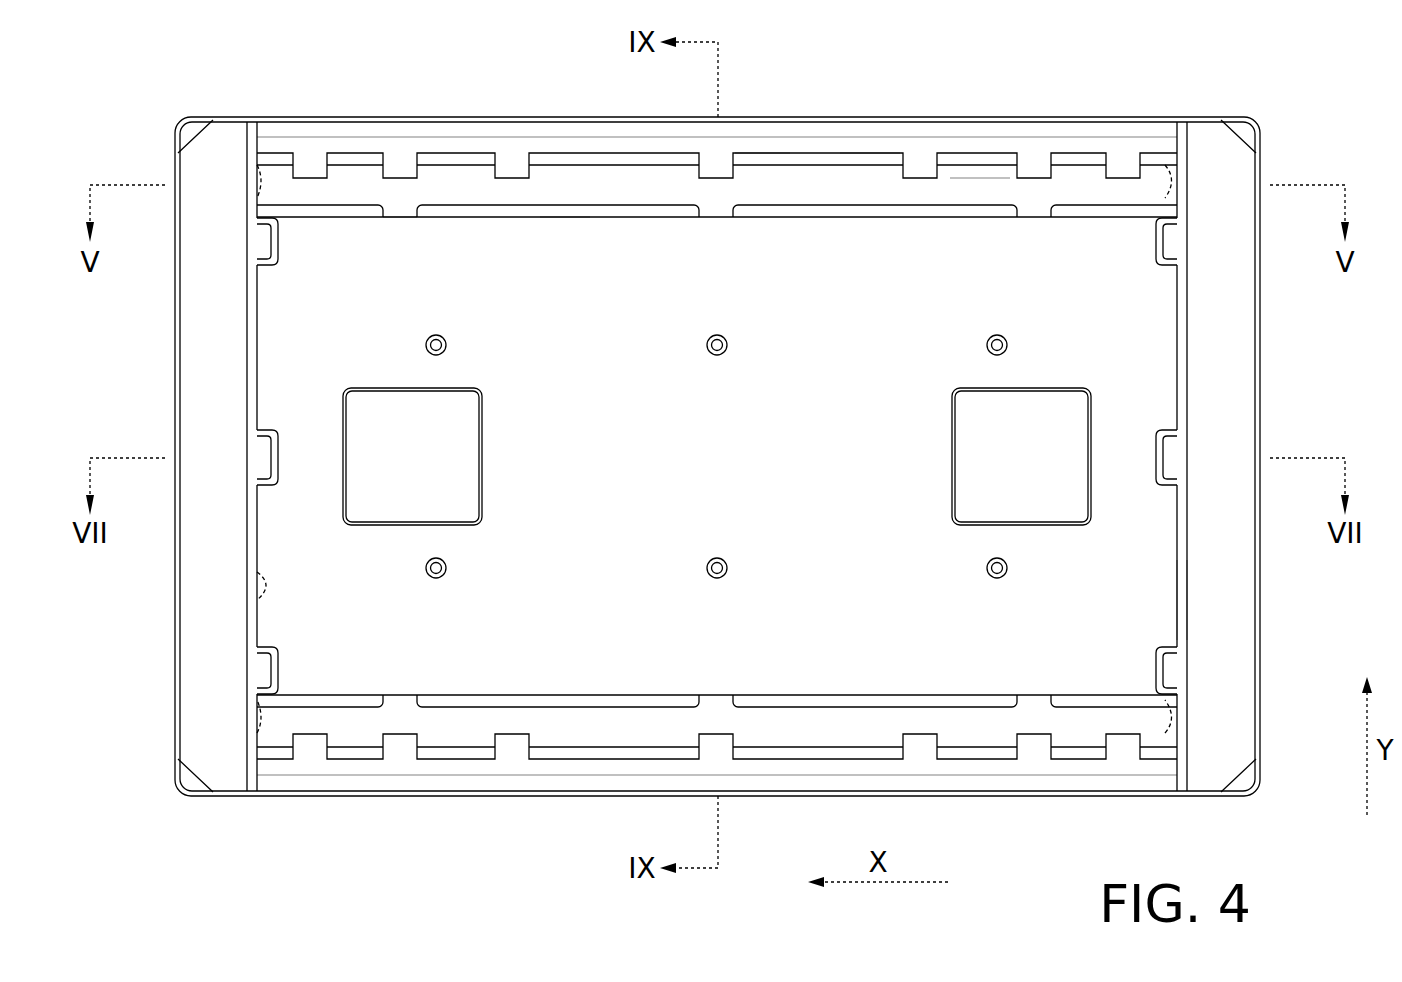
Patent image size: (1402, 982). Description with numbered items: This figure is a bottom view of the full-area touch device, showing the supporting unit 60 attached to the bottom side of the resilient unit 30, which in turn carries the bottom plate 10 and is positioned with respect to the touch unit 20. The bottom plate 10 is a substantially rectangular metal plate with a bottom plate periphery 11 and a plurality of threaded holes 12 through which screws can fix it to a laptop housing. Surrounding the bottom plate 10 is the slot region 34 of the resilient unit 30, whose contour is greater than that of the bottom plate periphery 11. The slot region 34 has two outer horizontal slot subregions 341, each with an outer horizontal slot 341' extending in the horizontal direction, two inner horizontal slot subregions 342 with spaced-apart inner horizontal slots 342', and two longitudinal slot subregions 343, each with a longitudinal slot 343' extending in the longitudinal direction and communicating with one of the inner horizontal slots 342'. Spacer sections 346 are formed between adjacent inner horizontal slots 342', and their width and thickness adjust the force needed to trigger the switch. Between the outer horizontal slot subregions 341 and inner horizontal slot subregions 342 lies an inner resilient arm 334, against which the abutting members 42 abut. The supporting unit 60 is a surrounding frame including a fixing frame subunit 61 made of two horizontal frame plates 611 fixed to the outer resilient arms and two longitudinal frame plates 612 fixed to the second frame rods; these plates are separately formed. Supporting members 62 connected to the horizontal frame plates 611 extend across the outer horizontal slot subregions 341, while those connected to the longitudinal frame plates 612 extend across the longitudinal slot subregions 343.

The bottom plate 10 is at (575, 596).
The bottom plate periphery 11 is at (262, 585).
The threaded holes 12 is at (432, 580).
The touch unit 20 is at (1259, 794).
The resilient unit 30 is at (782, 191).
The slot region 34 is at (820, 160).
The outer horizontal slot subregions 341 is at (873, 78).
The outer horizontal slot 341' is at (762, 90).
The inner horizontal slot subregions 342 is at (717, 381).
The inner horizontal slots 342' is at (559, 140).
The longitudinal slot subregions 343 is at (1262, 600).
The longitudinal slot 343' is at (1269, 617).
The inner resilient arm 334 is at (972, 188).
The spacer sections 346 is at (400, 213).
The abutting members 42 is at (1165, 195).
The supporting unit 60 is at (1259, 352).
The fixing frame subunit 61 is at (312, 770).
The horizontal frame plates 611 is at (907, 138).
The longitudinal frame plates 612 is at (205, 350).
The supporting members 62 is at (930, 172).